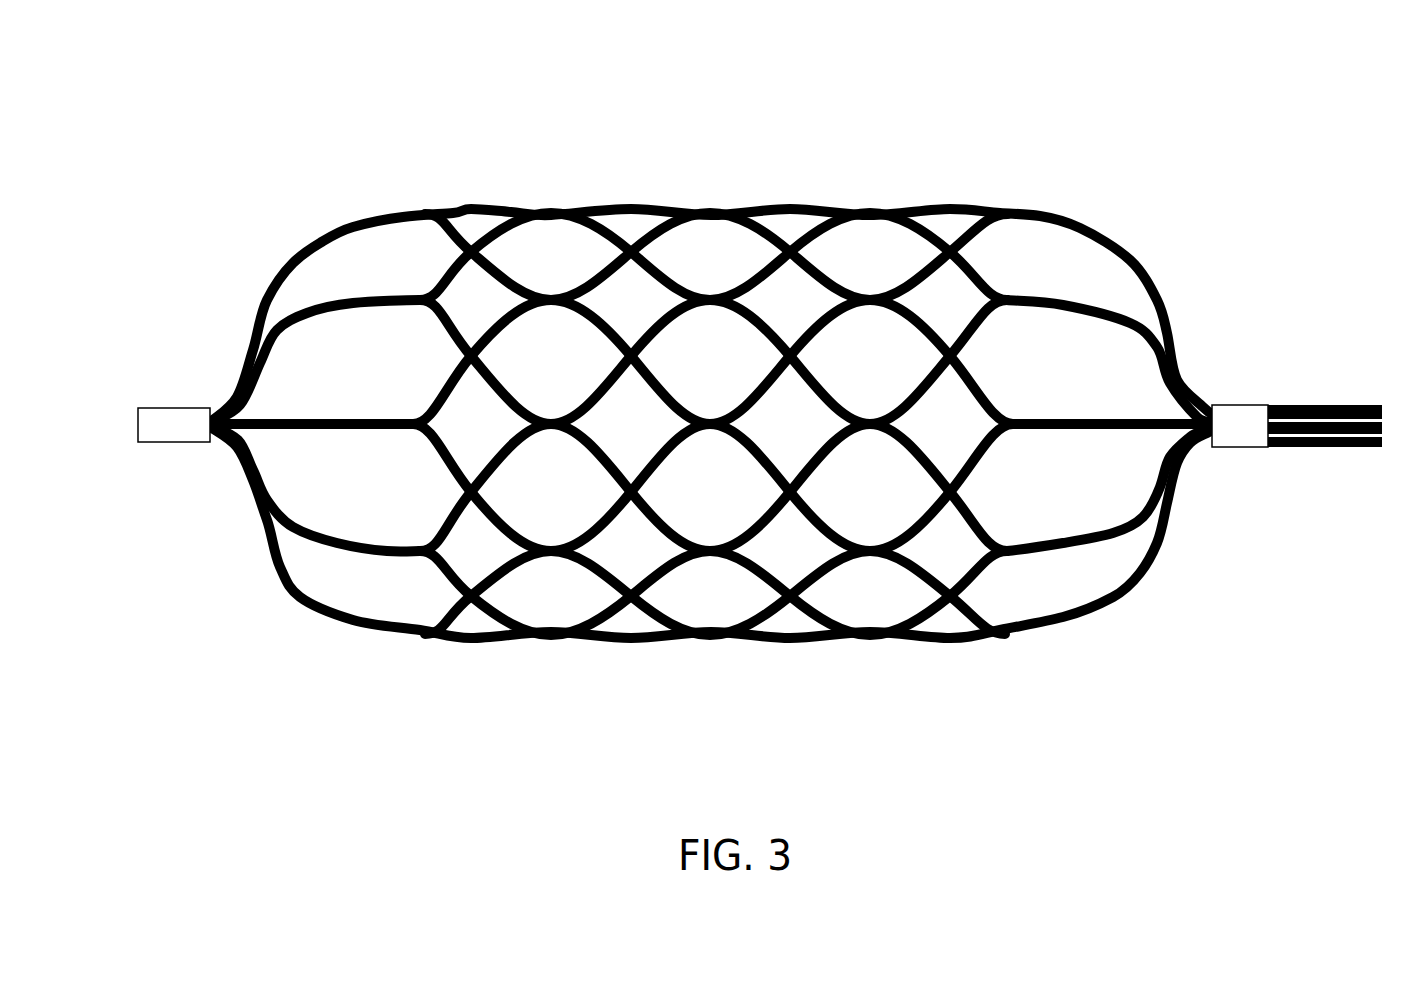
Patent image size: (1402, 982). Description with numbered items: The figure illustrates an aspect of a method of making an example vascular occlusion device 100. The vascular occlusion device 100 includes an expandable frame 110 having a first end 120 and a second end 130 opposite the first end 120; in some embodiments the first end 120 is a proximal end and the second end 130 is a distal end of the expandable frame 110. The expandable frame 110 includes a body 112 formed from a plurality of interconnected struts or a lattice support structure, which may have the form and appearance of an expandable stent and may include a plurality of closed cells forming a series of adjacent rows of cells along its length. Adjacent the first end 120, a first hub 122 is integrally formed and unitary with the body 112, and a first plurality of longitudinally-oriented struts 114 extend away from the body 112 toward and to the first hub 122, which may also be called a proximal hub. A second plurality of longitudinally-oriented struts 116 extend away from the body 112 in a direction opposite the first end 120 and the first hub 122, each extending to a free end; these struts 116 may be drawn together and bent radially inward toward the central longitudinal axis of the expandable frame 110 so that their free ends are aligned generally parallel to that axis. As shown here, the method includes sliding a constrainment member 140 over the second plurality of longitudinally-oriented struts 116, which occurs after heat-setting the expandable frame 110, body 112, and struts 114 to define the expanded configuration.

The vascular occlusion device 100 is at (735, 343).
The expandable frame 110 is at (470, 210).
The body 112 is at (740, 165).
The first plurality of longitudinally-oriented struts 114 is at (295, 257).
The second plurality of longitudinally-oriented struts 116 is at (1103, 240).
The first end 120 is at (149, 395).
The first hub 122 is at (173, 442).
The second end 130 is at (1283, 262).
The constrainment member 140 is at (1237, 403).